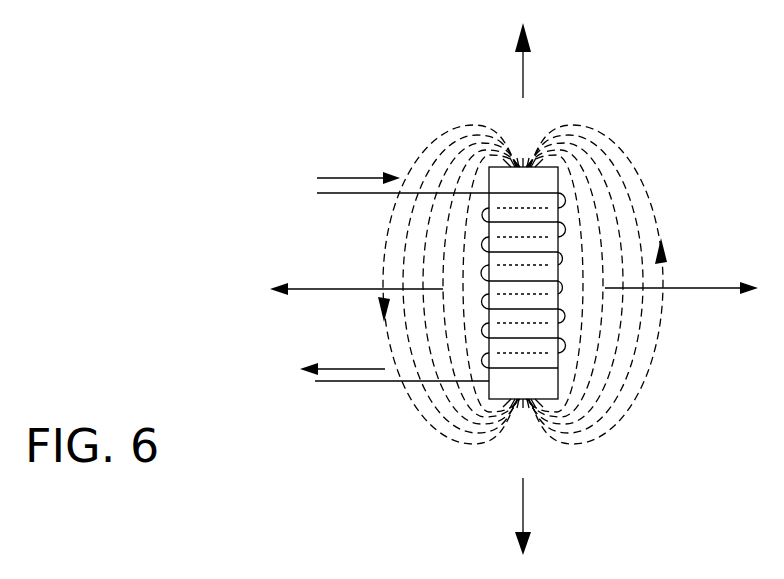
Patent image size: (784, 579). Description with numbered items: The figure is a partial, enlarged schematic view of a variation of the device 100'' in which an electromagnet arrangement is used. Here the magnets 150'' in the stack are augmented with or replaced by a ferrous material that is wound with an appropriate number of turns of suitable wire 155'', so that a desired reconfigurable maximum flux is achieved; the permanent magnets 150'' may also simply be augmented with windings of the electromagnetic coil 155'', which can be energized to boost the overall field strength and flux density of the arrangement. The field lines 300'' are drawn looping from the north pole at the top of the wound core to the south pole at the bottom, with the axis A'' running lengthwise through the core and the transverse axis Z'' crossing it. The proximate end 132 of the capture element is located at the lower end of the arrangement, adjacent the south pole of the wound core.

The electromagnetic device 100'' is at (510, 258).
The core 150'' is at (607, 265).
The coil winding 132 is at (558, 391).
The magnetic field lines 300'' is at (544, 259).
The flow lines 155'' is at (394, 314).
The Z axis Z'' is at (514, 294).
The A axis A'' is at (529, 289).